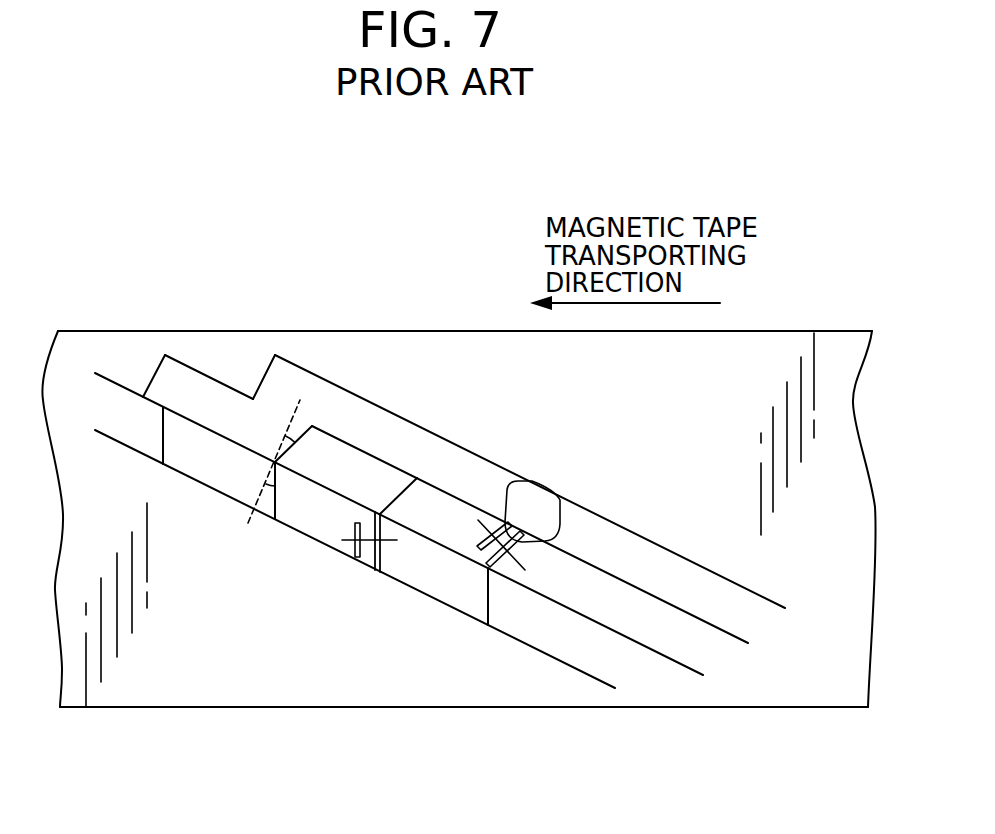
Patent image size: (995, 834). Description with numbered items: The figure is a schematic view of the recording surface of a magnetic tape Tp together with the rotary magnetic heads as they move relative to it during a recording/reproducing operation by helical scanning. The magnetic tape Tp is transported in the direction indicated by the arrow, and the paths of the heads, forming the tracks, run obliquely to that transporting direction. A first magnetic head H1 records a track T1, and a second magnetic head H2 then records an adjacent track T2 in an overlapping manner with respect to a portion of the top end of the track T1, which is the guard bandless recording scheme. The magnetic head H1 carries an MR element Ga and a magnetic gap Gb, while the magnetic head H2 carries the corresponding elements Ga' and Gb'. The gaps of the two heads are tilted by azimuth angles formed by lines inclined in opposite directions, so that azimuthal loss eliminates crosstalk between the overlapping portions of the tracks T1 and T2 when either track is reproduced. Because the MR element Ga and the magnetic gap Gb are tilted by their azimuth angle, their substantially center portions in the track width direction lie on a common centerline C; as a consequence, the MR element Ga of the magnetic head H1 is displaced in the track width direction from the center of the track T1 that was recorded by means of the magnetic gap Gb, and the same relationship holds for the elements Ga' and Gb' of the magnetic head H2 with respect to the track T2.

The magnetic tape Tp is at (338, 331).
The track T1 is at (655, 681).
The track T2 is at (705, 644).
The magnetic head H1 is at (363, 637).
The magnetic head H2 is at (662, 470).
The MR element Ga is at (310, 565).
The magnetic gap Gb is at (351, 574).
The first gap of second head Ga' is at (531, 485).
The second gap of second head Gb' is at (570, 511).
The centerline C is at (446, 556).